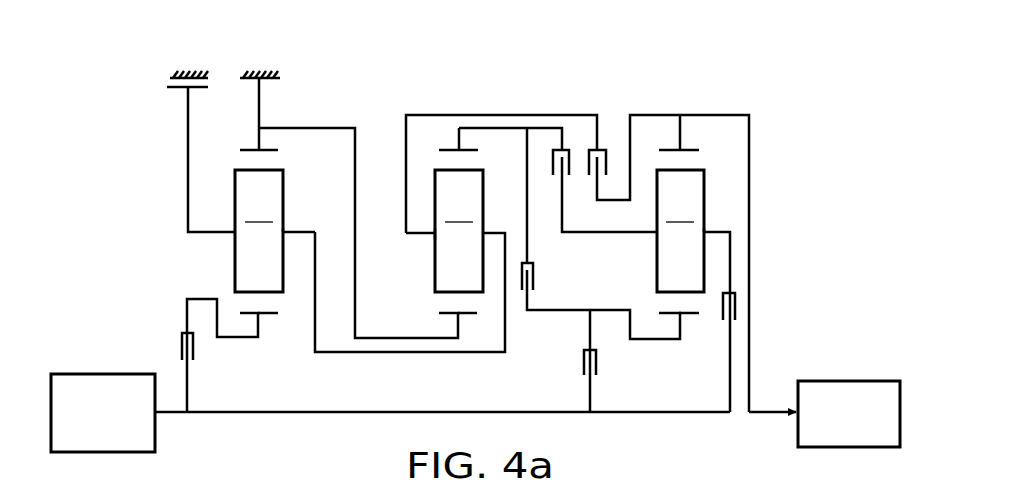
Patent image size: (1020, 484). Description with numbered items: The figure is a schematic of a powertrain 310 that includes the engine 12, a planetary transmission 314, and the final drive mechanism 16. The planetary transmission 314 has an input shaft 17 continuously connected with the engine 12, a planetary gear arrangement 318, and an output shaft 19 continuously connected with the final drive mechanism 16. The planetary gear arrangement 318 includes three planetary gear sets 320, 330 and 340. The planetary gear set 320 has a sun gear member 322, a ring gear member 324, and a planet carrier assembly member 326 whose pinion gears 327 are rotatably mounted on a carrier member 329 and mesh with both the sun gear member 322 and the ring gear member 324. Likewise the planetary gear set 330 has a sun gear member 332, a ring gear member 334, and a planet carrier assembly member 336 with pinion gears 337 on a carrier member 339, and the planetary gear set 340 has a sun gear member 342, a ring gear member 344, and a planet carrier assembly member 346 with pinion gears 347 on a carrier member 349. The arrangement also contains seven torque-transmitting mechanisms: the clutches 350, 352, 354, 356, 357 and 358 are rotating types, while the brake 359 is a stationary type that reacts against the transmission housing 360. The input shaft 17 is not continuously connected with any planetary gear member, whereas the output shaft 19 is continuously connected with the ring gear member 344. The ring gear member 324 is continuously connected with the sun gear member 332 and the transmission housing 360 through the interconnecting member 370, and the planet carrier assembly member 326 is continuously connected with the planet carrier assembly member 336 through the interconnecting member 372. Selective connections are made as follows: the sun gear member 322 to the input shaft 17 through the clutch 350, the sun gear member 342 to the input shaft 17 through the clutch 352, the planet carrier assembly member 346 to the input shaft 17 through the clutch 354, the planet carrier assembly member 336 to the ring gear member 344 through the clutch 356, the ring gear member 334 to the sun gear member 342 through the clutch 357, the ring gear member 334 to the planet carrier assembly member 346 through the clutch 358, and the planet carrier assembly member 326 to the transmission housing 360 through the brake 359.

The engine 12 is at (122, 358).
The final drive mechanism 16 is at (833, 368).
The input shaft 17 is at (172, 414).
The output shaft 19 is at (760, 414).
The powertrain 310 is at (155, 178).
The planetary transmission 314 is at (375, 93).
The planetary gear arrangement 318 is at (482, 93).
The planetary gear set 320 is at (248, 318).
The sun gear member 322 is at (268, 316).
The ring gear member 324 is at (245, 147).
The planet carrier assembly member 326 is at (288, 222).
The pinion gears 327 is at (259, 231).
The carrier member 329 is at (303, 229).
The planetary gear set 330 is at (447, 318).
The sun gear member 332 is at (467, 316).
The ring gear member 334 is at (452, 148).
The planet carrier assembly member 336 is at (432, 240).
The pinion gears 337 is at (459, 231).
The carrier member 339 is at (417, 238).
The planetary gear set 340 is at (673, 318).
The sun gear member 342 is at (693, 316).
The ring gear member 344 is at (672, 148).
The planet carrier assembly member 346 is at (712, 225).
The pinion gears 347 is at (680, 231).
The carrier member 349 is at (718, 229).
The clutch 350 is at (175, 330).
The clutch 352 is at (600, 380).
The clutch 354 is at (740, 300).
The clutch 356 is at (588, 146).
The clutch 357 is at (541, 288).
The clutch 358 is at (552, 146).
The brake 359 is at (163, 79).
The transmission housing 360 is at (173, 76).
The interconnecting member 370 is at (320, 126).
The interconnecting member 372 is at (355, 353).